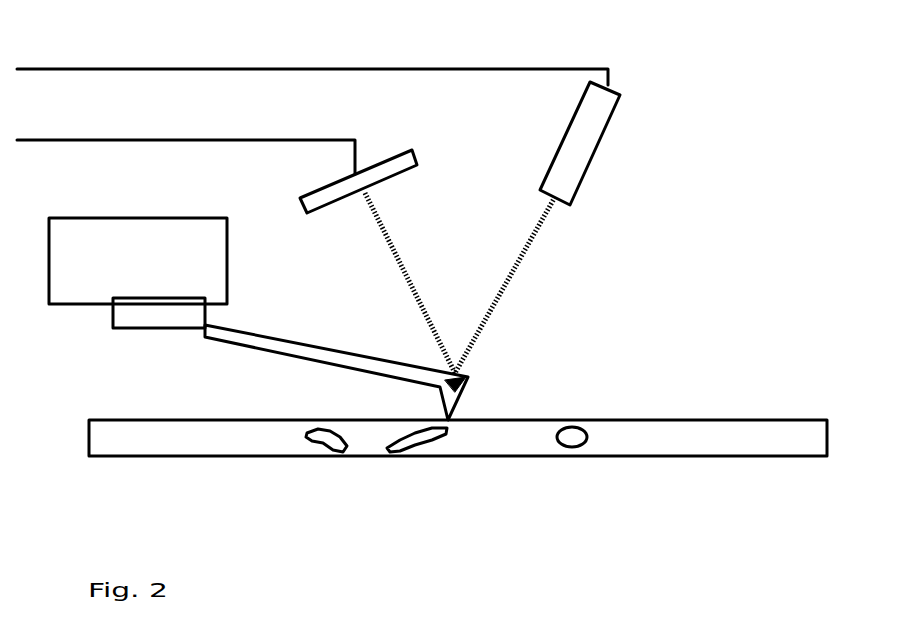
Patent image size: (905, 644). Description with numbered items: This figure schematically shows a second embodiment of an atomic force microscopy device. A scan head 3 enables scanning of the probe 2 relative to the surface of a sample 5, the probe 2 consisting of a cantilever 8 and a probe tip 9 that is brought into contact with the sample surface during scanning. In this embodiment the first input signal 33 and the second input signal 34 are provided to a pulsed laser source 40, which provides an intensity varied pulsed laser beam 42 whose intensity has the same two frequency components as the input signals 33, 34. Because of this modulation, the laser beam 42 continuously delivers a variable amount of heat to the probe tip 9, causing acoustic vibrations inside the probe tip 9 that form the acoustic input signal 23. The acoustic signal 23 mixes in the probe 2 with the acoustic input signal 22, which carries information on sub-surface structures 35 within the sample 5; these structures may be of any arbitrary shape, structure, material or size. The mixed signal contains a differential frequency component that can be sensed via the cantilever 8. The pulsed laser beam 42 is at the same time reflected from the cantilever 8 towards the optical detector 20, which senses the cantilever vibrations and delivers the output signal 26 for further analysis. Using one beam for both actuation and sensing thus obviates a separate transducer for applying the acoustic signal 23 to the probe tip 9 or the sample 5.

The probe 2 is at (336, 354).
The scan head 3 is at (225, 259).
The sample 5 is at (458, 414).
The cantilever 8 is at (336, 369).
The probe tip 9 is at (435, 395).
The optical detector 20 is at (405, 170).
The acoustic input signal 22 is at (480, 447).
The acoustic input signal 23 is at (470, 382).
The output signal 26 is at (248, 140).
The first input signal 33 is at (312, 54).
The second input signal 34 is at (250, 69).
The sub-surface structures 35 is at (307, 433).
The pulsed laser source 40 is at (592, 160).
The pulsed laser beam 42 is at (508, 270).